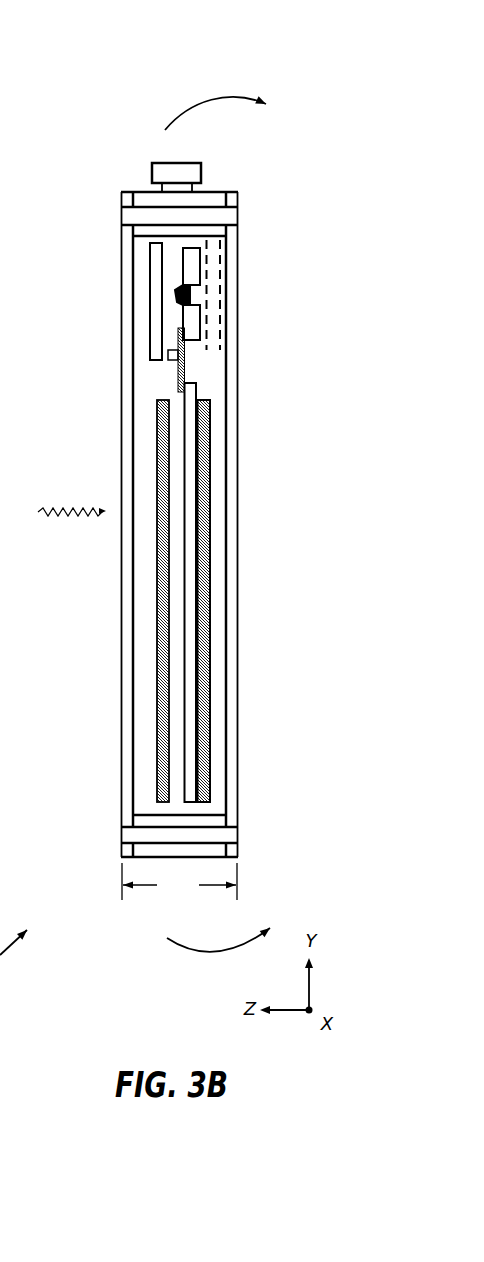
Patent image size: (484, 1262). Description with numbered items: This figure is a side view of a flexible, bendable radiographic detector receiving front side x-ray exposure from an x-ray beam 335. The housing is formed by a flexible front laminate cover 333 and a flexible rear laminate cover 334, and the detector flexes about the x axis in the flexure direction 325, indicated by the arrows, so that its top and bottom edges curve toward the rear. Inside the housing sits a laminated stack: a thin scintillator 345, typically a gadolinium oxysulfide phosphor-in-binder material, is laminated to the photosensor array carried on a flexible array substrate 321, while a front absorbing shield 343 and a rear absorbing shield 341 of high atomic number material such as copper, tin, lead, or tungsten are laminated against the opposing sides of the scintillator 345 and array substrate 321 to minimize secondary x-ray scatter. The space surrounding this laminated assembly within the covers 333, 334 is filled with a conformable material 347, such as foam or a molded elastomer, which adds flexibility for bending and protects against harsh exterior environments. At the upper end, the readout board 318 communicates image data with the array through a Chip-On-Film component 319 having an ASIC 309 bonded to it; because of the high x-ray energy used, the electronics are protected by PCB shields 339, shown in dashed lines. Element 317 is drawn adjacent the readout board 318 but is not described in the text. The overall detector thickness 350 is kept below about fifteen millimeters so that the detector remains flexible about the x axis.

The flexure direction 325 is at (200, 95).
The upper contact member 317 is at (193, 266).
The PCB shield 339 is at (150, 297).
The readout board 318 is at (188, 320).
The Chip-On-Film component 319 is at (183, 365).
The Application Specific Integrated Circuit 309 is at (178, 360).
The front laminate cover 333 is at (122, 415).
The rear laminate cover 334 is at (238, 432).
The x-ray beam 335 is at (88, 522).
The conformable material 347 is at (145, 638).
The array substrate 321 is at (188, 655).
The scintillator 345 is at (174, 690).
The front absorbing shield 343 is at (208, 738).
The rear absorbing shield 341 is at (156, 750).
The overall detector thickness 350 is at (179, 881).